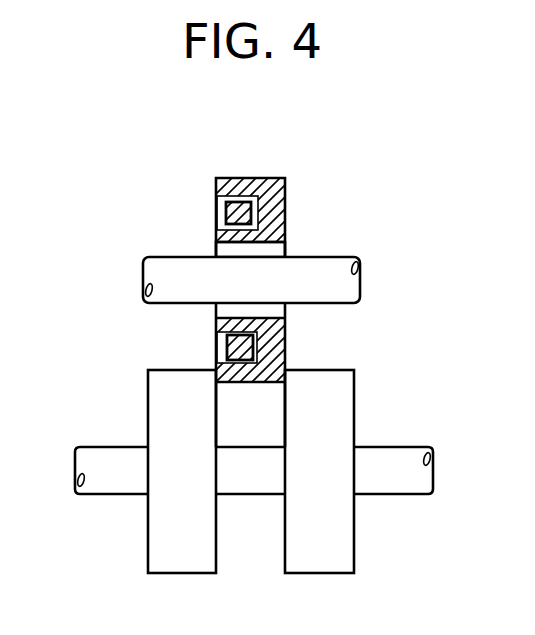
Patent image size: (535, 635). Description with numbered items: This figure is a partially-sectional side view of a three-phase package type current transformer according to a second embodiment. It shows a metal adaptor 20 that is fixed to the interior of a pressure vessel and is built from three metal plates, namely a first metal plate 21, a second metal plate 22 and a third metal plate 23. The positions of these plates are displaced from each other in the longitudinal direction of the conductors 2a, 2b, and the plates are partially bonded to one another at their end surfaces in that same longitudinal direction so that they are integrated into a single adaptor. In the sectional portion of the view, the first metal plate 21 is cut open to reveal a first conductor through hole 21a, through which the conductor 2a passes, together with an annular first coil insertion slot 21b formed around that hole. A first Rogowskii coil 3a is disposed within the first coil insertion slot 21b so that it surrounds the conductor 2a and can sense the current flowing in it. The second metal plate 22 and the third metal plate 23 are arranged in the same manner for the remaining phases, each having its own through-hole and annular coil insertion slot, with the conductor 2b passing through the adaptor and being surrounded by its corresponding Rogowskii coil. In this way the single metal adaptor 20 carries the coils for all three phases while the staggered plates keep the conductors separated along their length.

The metal adaptor 20 is at (259, 266).
The first metal plate 21 is at (259, 278).
The first conductor through hole 21a is at (216, 252).
The first coil insertion slot 21b is at (230, 193).
The first Rogowskii coil 3a is at (226, 213).
The conductor 2a is at (310, 257).
The conductor 2b is at (390, 447).
The second metal plate 22 is at (148, 523).
The third metal plate 23 is at (354, 530).